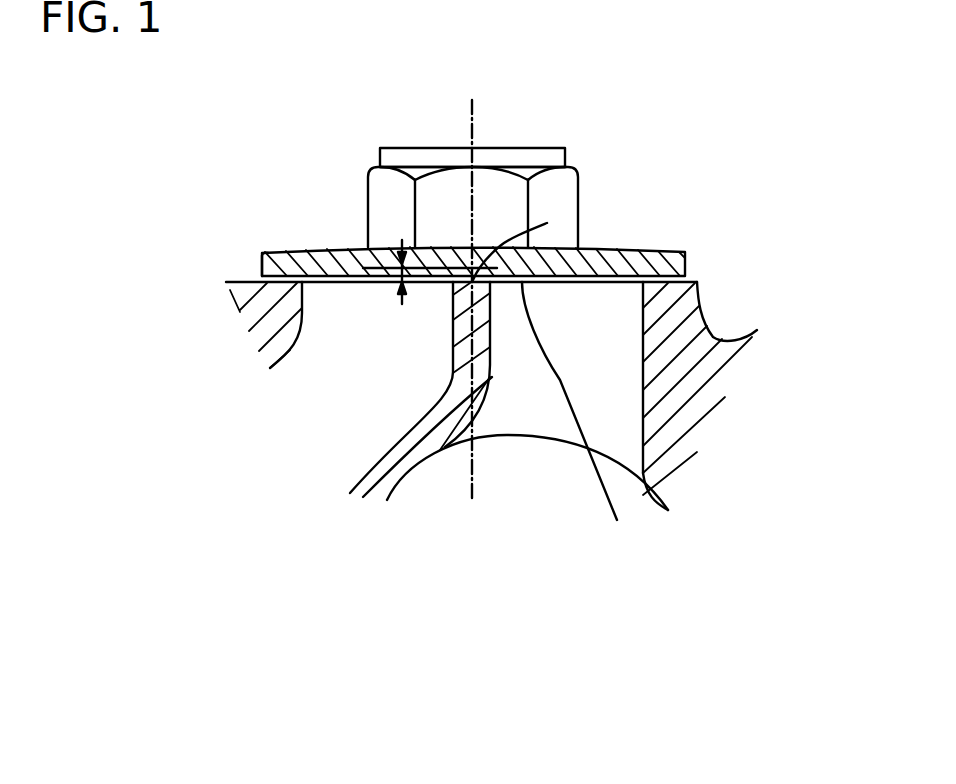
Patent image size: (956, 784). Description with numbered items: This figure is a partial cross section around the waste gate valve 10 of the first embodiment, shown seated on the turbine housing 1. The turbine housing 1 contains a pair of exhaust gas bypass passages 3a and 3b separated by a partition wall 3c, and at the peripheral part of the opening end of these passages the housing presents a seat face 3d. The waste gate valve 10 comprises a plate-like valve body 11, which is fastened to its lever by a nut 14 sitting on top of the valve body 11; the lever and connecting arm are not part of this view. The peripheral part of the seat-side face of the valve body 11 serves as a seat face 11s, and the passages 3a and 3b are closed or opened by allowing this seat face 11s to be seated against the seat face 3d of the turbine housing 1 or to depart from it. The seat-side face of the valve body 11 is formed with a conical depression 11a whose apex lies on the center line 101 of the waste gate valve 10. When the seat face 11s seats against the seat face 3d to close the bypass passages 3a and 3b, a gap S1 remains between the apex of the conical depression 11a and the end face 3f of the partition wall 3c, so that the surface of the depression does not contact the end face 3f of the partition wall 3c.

The turbine housing 1 is at (712, 294).
The center line 101 is at (472, 118).
The waste gate valve 10 is at (480, 178).
The nut 14 is at (378, 200).
The valve body 11 is at (657, 255).
The conical depression 11a is at (587, 423).
The seat face 11s is at (657, 283).
The exhaust gas bypass passage 3a is at (322, 353).
The exhaust gas bypass passage 3b is at (608, 385).
The partition wall 3c is at (487, 377).
The seat face 3d is at (262, 258).
The end face 3f is at (547, 223).
The gap S1 is at (401, 291).